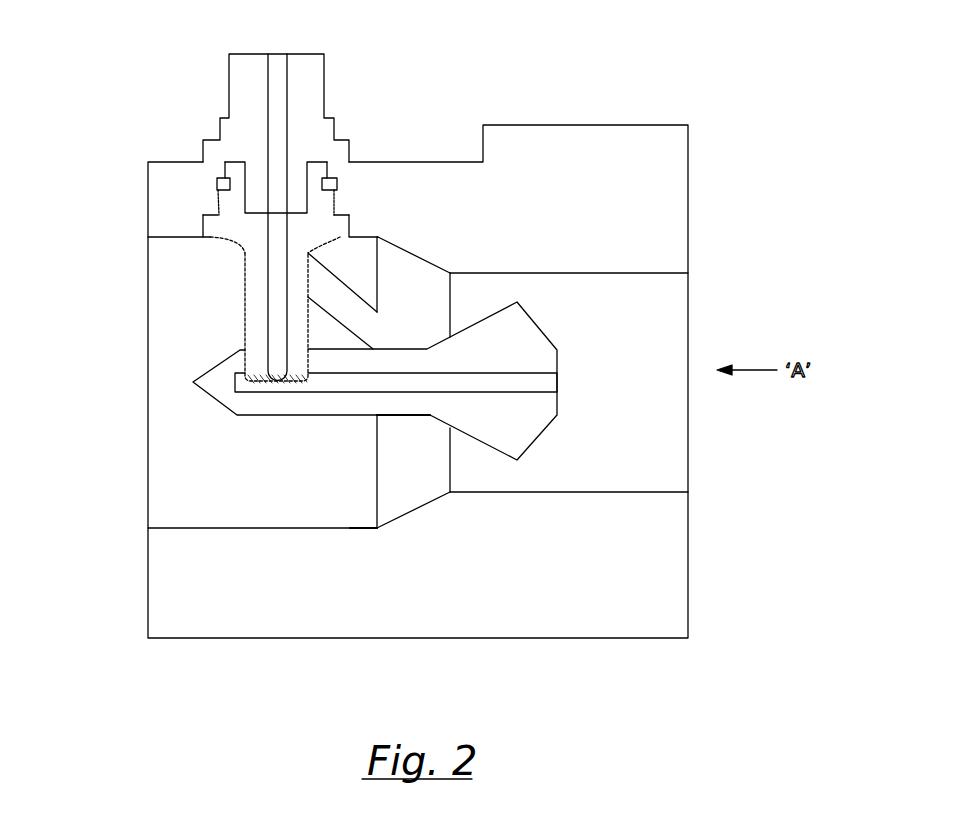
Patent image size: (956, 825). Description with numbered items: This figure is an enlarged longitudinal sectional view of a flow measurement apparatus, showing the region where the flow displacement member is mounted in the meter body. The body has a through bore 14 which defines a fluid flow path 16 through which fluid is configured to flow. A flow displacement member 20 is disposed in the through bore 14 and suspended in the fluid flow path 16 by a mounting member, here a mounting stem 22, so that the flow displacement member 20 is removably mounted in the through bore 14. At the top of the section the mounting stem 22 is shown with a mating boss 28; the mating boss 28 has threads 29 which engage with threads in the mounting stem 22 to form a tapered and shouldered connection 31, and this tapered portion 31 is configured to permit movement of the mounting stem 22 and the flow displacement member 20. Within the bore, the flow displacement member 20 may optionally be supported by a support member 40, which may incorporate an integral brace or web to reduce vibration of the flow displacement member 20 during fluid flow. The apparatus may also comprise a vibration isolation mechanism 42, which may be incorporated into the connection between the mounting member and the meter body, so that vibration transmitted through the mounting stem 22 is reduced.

The through bore 14 is at (185, 462).
The fluid flow path 16 is at (205, 505).
The flow displacement member 20 is at (318, 403).
The mounting stem 22 is at (245, 290).
The mating boss 28 is at (218, 131).
The threads 29 is at (330, 172).
The tapered and shouldered connection 31 is at (217, 200).
The support member 40 is at (337, 302).
The vibration isolation mechanism 42 is at (337, 197).